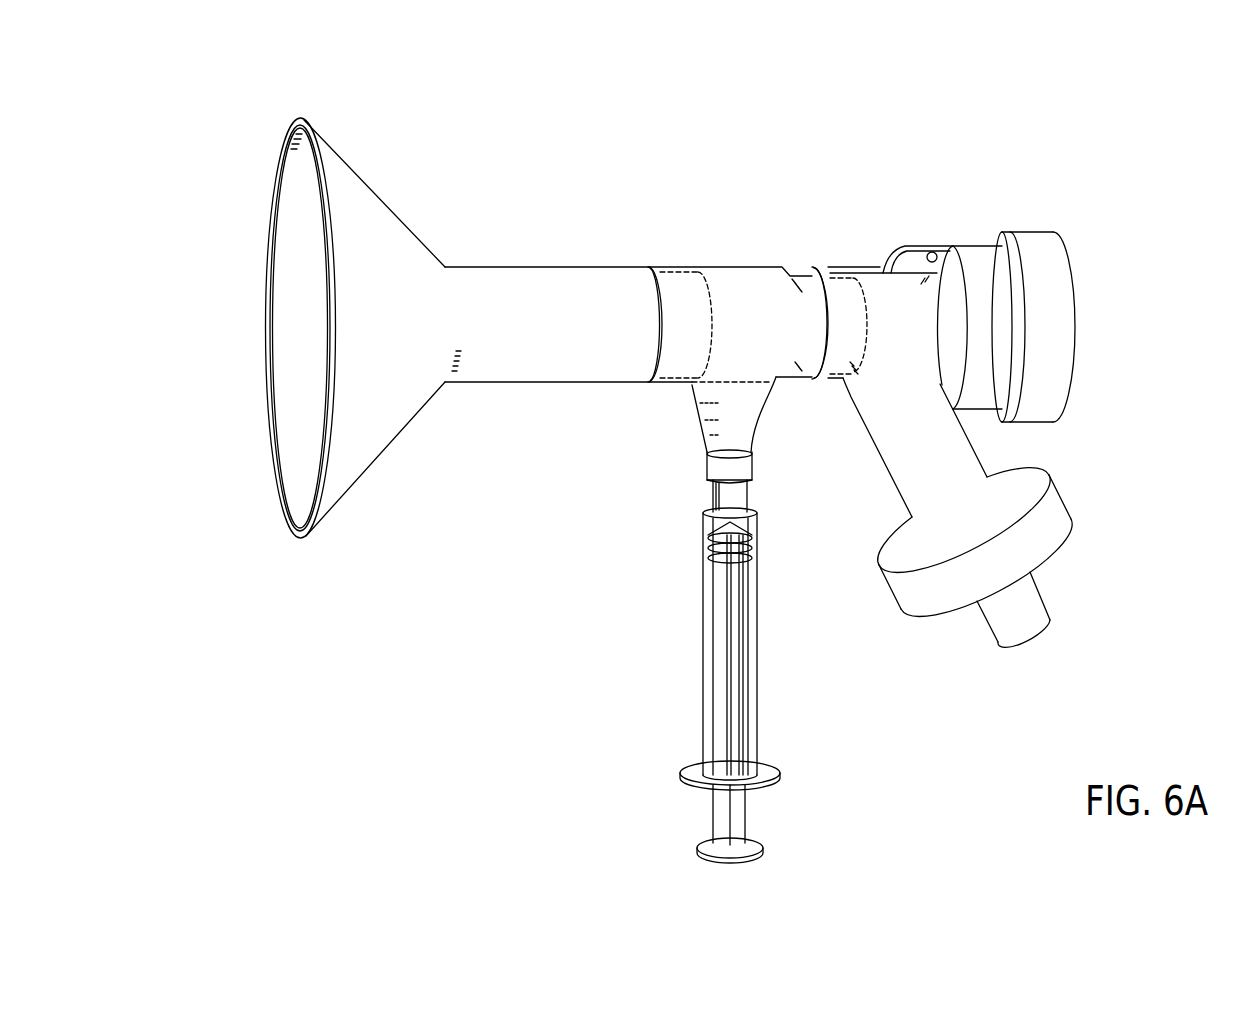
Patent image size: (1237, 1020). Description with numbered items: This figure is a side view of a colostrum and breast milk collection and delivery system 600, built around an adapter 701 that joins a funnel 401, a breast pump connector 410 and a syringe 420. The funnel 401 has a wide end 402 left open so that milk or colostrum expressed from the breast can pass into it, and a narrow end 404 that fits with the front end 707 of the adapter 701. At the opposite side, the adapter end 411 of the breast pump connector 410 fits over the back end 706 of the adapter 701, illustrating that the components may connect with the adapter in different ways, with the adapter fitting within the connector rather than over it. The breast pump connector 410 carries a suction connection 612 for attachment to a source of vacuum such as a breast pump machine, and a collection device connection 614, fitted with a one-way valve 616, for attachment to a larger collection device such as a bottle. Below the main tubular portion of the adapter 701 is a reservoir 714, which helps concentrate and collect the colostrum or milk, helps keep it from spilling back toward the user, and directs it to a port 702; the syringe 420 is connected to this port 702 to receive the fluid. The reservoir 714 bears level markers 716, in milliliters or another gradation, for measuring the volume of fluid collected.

The system 600 is at (512, 95).
The funnel 401 is at (465, 267).
The wide end 402 is at (288, 388).
The narrow end 404 is at (672, 267).
The breast pump connector 410 is at (1027, 243).
The adapter end 411 is at (812, 266).
The syringe 420 is at (686, 573).
The suction connection 612 is at (1077, 278).
The collection device connection 614 is at (1060, 482).
The one-way valve 616 is at (1027, 620).
The adapter 701 is at (757, 267).
The port 702 is at (705, 448).
The back end 706 is at (853, 308).
The front end 707 is at (640, 267).
The reservoir 714 is at (752, 395).
The level markers 716 is at (698, 418).